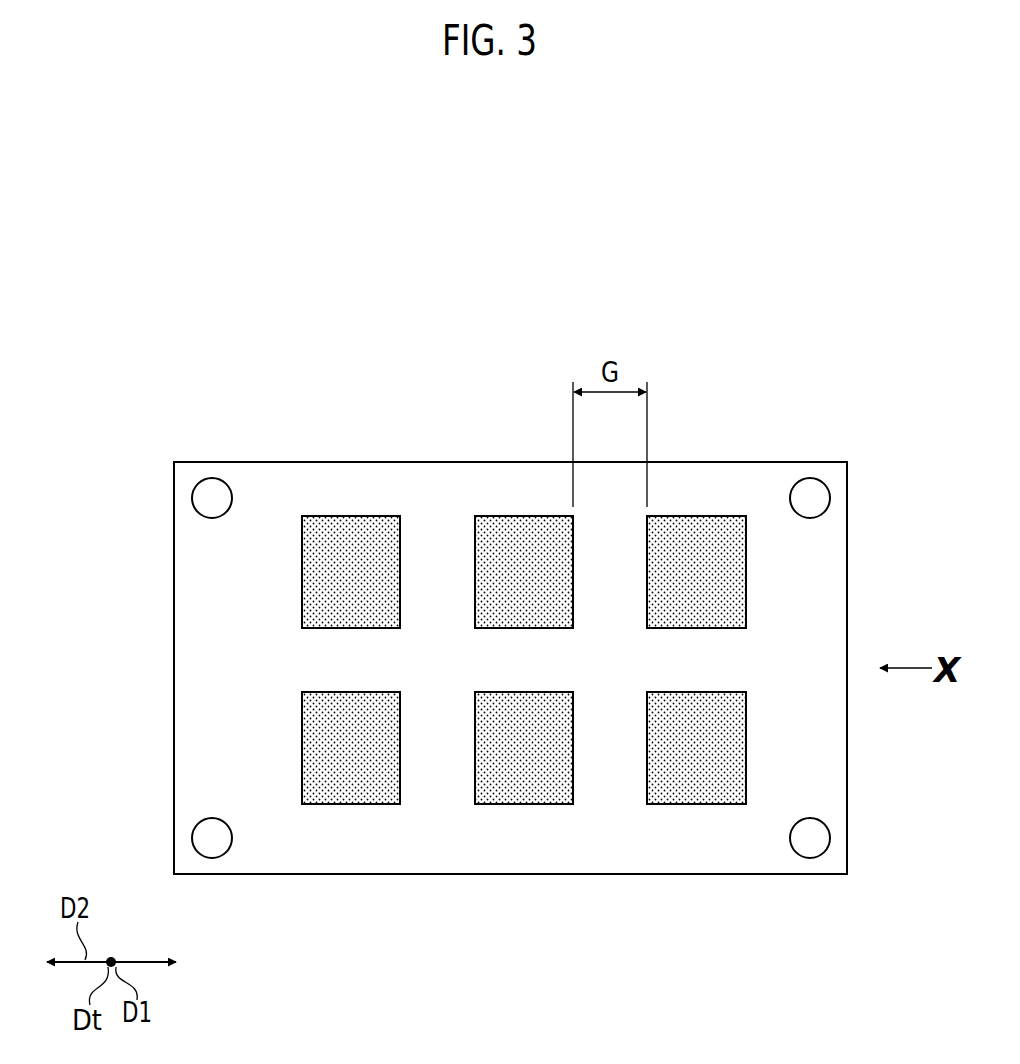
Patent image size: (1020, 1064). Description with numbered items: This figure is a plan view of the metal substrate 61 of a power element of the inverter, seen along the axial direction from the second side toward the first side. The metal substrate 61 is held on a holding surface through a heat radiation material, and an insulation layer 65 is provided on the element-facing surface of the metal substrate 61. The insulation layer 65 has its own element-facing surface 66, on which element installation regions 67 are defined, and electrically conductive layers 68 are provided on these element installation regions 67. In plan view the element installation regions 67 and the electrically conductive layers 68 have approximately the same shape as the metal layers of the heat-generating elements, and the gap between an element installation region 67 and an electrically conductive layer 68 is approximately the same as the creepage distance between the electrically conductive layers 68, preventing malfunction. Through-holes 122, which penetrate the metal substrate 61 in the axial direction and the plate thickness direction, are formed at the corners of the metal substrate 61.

The metal substrate 61 is at (799, 458).
The insulation layer 65 is at (817, 568).
The element-facing surface 66 is at (823, 605).
The element installation region 67 is at (370, 556).
The electrically conductive layer 68 is at (333, 555).
The through-hole 122 is at (196, 484).